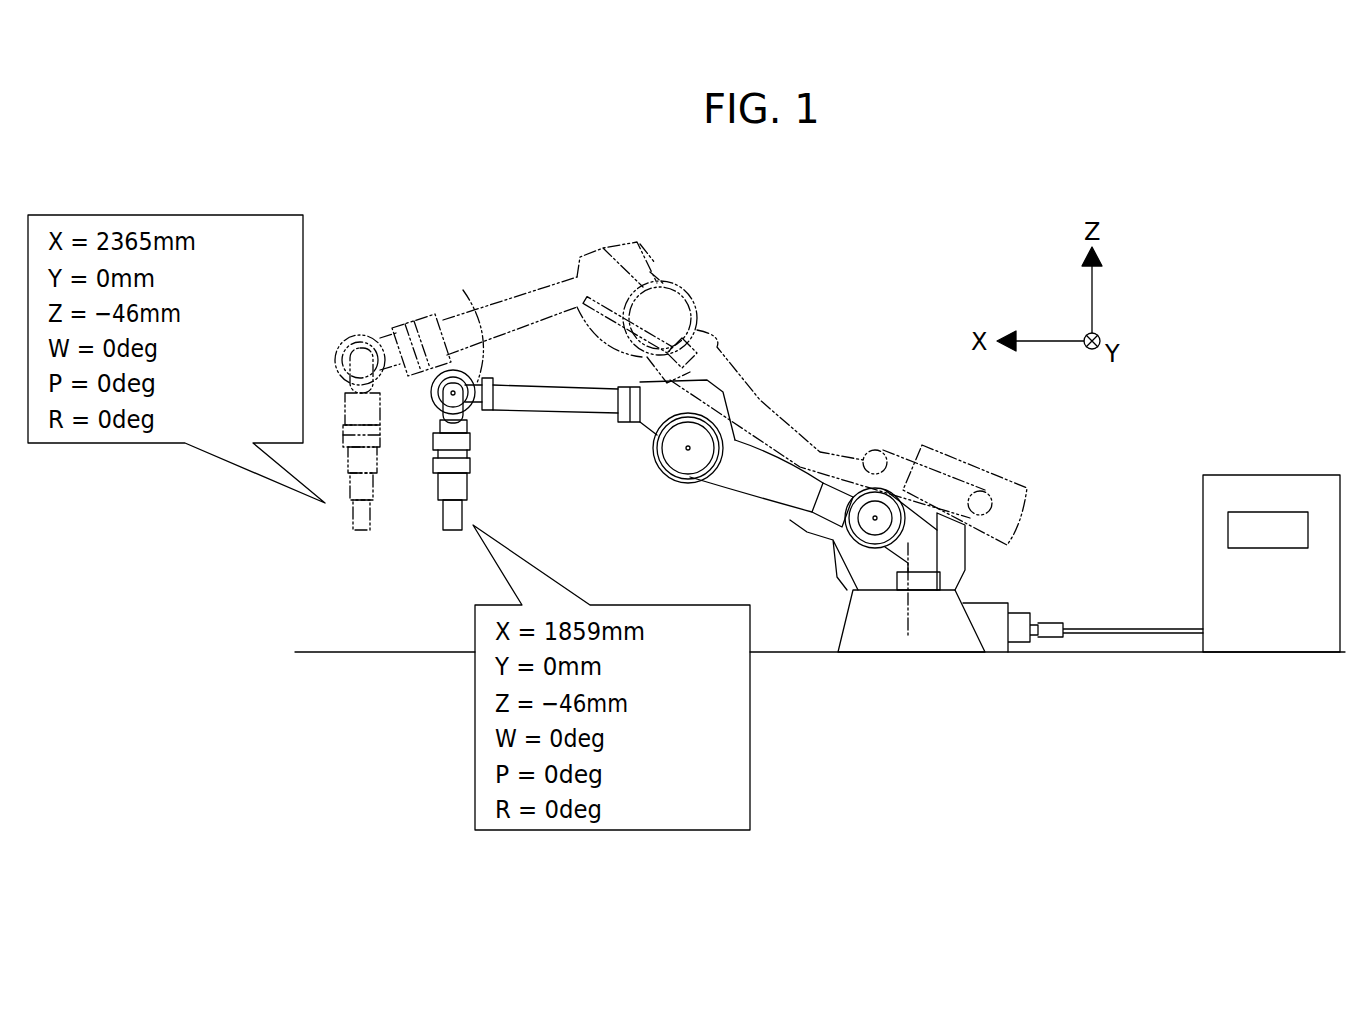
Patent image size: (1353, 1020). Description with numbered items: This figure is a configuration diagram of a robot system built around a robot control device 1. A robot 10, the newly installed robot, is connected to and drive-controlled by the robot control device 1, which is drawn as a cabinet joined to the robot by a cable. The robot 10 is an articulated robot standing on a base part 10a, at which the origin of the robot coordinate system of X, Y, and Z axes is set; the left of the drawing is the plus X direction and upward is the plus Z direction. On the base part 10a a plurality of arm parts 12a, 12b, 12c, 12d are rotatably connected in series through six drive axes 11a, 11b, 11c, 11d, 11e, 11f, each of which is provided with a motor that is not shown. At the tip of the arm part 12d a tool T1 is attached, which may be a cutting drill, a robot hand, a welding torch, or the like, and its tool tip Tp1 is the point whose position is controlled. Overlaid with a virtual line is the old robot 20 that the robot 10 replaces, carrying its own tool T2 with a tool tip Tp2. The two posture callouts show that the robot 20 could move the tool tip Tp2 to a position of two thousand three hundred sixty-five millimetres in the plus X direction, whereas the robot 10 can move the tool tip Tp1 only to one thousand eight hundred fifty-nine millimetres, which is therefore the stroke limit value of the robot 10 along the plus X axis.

The robot control device 1 is at (1268, 475).
The robot 10 is at (780, 450).
The base part 10a is at (956, 591).
The drive axis 11a is at (907, 623).
The drive axis 11b is at (873, 520).
The drive axis 11c is at (688, 450).
The drive axis 11d is at (492, 378).
The drive axis 11e is at (455, 395).
The drive axis 11f is at (471, 466).
The arm part 12a is at (758, 480).
The arm part 12b is at (587, 403).
The arm part 12c is at (480, 373).
The arm part 12d is at (437, 423).
The robot 20 is at (722, 343).
The tool T1 is at (470, 513).
The tool T2 is at (351, 520).
The tool tip Tp1 is at (453, 533).
The tool tip Tp2 is at (362, 533).